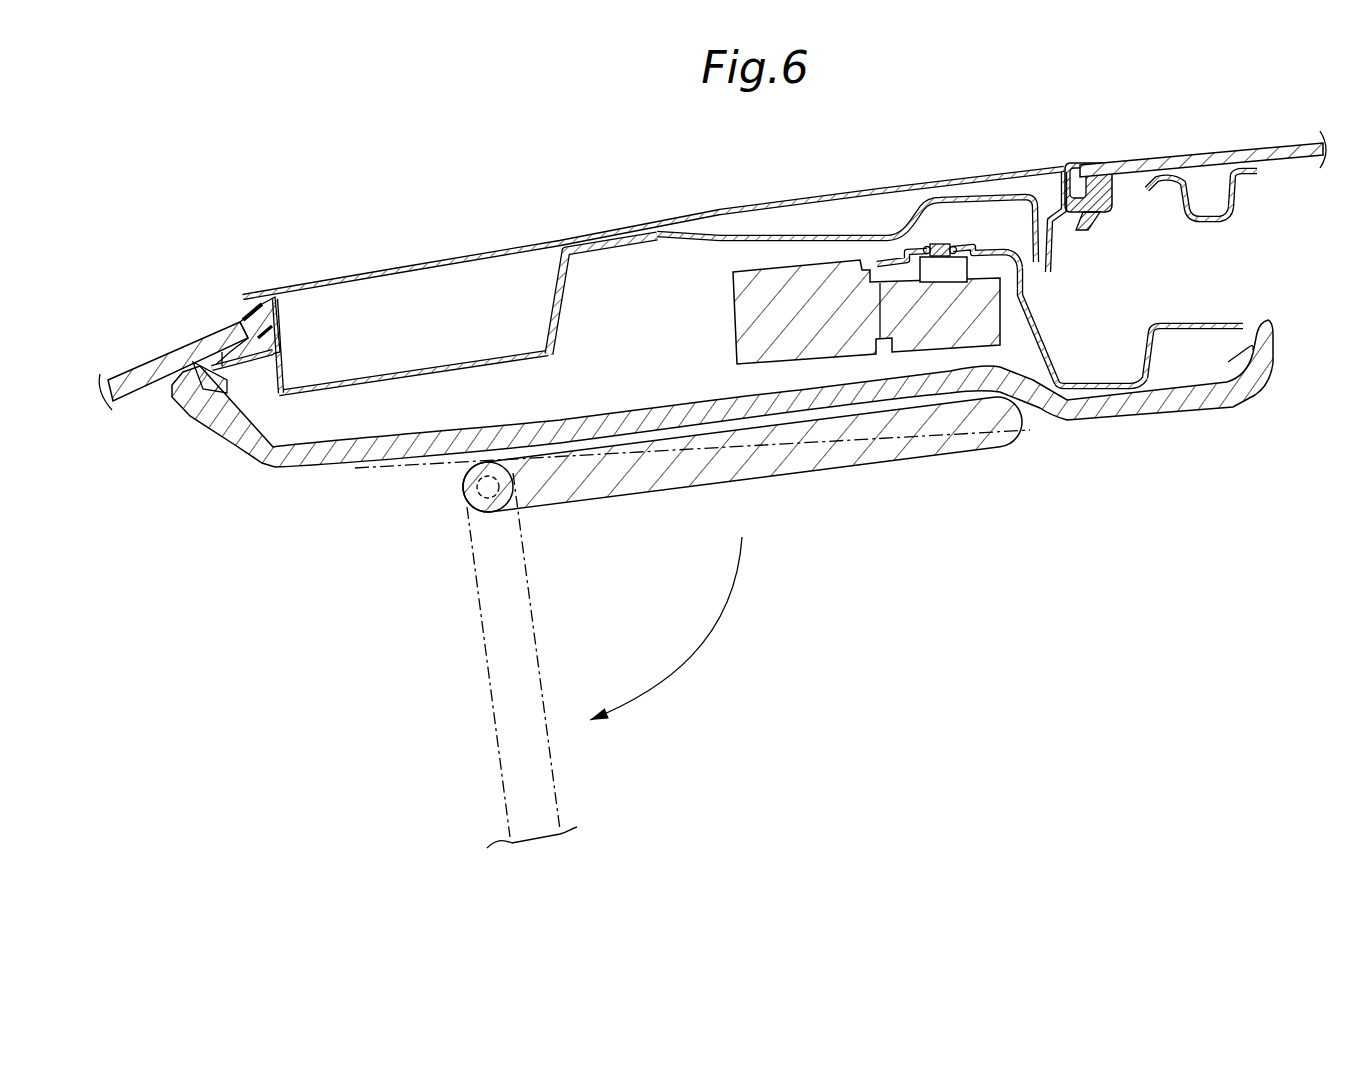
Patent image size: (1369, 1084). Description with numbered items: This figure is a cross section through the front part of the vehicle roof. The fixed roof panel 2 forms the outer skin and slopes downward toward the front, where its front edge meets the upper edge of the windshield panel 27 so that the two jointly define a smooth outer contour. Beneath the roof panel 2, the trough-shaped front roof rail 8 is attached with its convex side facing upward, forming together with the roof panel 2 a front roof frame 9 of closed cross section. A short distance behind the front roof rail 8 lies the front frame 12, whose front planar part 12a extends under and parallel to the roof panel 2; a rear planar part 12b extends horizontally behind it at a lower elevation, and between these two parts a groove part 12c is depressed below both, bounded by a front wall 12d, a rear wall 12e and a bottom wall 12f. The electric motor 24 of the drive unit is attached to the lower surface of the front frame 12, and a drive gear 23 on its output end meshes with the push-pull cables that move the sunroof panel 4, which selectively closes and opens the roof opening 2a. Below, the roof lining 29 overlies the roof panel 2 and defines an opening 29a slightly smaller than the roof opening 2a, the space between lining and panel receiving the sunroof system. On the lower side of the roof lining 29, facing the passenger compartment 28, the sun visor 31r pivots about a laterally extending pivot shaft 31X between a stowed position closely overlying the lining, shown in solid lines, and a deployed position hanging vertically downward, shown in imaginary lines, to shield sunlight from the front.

The roof panel 2 is at (828, 195).
The roof opening 2a is at (1068, 163).
The sunroof panel 4 is at (1188, 156).
The front roof rail 8 is at (566, 303).
The front roof frame 9 is at (398, 262).
The front frame 12 is at (1067, 278).
The front planar part 12a is at (987, 249).
The rear planar part 12b is at (1210, 324).
The groove part 12c is at (1103, 296).
The front wall 12d is at (1023, 297).
The rear wall 12e is at (1146, 370).
The bottom wall 12f is at (1079, 383).
The drive gear 23 is at (938, 243).
The electric motor 24 is at (733, 337).
The windshield panel 27 is at (144, 365).
The passenger compartment 28 is at (973, 561).
The roof lining 29 is at (747, 413).
The opening 29a is at (1274, 358).
The arm 31r is at (838, 467).
The pivot shaft 31X is at (476, 505).